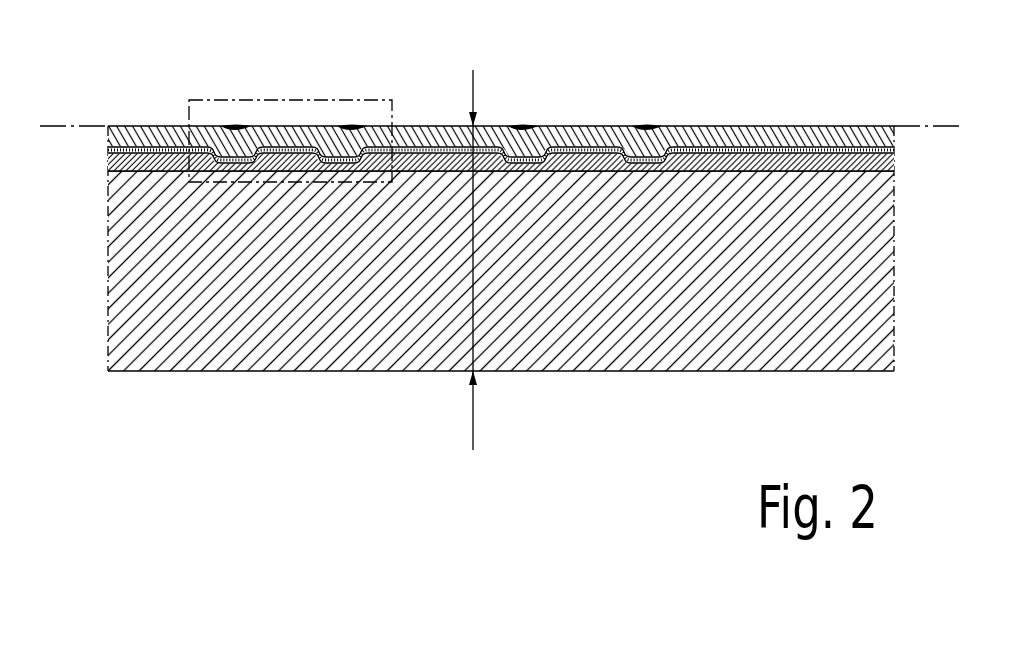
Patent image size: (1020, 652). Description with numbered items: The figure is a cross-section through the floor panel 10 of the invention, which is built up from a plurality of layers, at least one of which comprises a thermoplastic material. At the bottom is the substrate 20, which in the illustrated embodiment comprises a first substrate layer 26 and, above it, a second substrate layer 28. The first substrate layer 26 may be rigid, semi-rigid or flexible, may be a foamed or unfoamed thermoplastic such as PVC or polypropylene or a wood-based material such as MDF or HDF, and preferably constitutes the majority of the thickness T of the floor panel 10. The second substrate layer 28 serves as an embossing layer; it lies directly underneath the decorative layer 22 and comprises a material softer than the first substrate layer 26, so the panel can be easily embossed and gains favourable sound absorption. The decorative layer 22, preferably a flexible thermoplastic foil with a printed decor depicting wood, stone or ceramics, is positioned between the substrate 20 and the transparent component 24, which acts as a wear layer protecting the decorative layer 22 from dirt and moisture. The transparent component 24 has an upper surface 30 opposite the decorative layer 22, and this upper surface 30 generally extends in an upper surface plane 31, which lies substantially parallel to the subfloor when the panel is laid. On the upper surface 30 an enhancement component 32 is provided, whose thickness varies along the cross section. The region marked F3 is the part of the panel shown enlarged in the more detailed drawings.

The floor panel 10 is at (220, 74).
The substrate 20 is at (518, 270).
The decorative layer 22 is at (895, 148).
The transparent component 24 is at (884, 143).
The first substrate layer 26 is at (643, 320).
The second substrate layer 28 is at (740, 172).
The upper surface 30 is at (772, 126).
The upper surface plane 31 is at (68, 125).
The enhancement component 32 is at (647, 126).
The detail region F3 is at (393, 105).
The thickness T is at (473, 84).